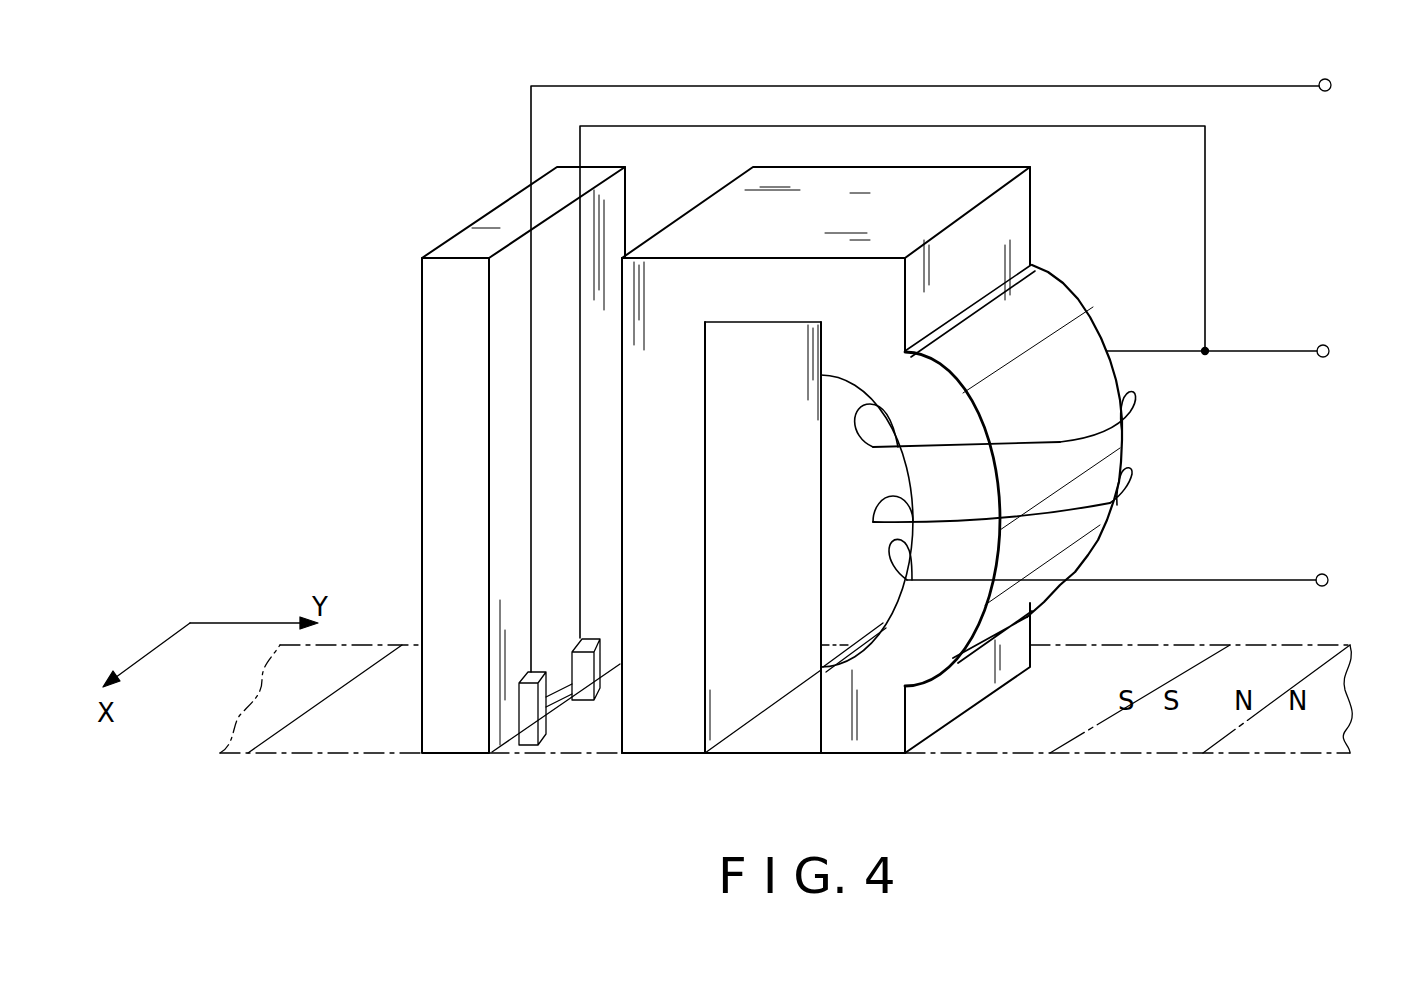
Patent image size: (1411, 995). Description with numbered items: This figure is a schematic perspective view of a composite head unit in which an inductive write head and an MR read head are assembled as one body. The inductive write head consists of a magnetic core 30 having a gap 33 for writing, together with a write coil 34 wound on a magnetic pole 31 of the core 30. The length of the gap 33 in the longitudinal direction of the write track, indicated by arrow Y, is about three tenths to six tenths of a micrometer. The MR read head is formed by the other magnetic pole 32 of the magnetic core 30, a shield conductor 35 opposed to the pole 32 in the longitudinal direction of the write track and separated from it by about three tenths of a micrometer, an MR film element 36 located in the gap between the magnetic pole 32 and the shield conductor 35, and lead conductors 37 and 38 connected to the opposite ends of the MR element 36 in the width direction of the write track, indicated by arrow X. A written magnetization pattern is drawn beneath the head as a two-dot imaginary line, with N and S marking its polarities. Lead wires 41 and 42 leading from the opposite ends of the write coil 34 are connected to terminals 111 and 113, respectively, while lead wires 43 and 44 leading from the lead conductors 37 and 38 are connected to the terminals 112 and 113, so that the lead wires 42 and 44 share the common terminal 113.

The magnetic core 30 is at (856, 219).
The magnetic pole 31 is at (1058, 307).
The magnetic pole 32 is at (683, 292).
The gap 33 is at (778, 732).
The write coil 34 is at (895, 556).
The shield conductor 35 is at (438, 594).
The MR film element 36 is at (567, 712).
The lead conductor 37 is at (537, 730).
The lead conductor 38 is at (572, 650).
The lead wire 41 is at (1303, 578).
The lead wire 42 is at (1183, 358).
The lead wire 43 is at (1288, 86).
The lead wire 44 is at (1206, 188).
The terminal 111 is at (1326, 586).
The terminal 112 is at (1327, 91).
The terminal 113 is at (1324, 345).